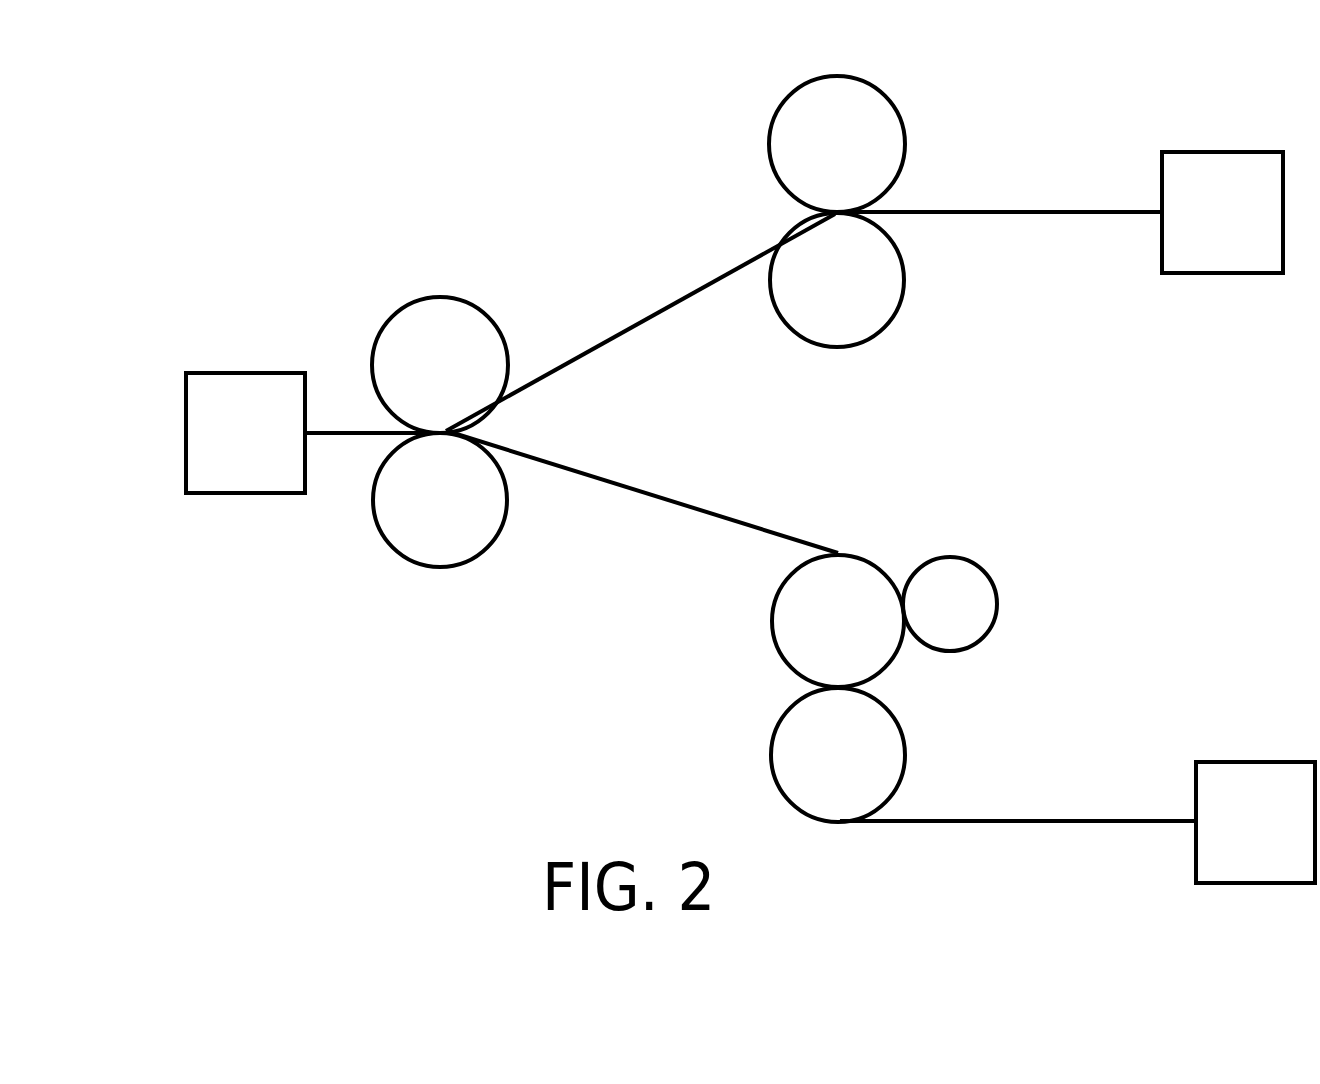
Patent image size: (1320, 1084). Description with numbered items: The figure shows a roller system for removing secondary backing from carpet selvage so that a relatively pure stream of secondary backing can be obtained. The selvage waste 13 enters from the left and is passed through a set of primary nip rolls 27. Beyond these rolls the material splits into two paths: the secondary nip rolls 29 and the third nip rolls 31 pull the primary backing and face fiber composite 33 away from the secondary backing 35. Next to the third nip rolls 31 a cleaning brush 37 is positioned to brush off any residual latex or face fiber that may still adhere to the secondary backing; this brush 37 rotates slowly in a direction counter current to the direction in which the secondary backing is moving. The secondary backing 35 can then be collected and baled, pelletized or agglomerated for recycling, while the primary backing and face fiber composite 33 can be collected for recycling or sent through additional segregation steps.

The selvage waste 13 is at (222, 456).
The primary nip rolls 27 is at (412, 390).
The secondary nip rolls 29 is at (810, 168).
The third nip rolls 31 is at (810, 643).
The primary backing and face fiber composite 33 is at (1196, 237).
The secondary backing 35 is at (1228, 847).
The cleaning brush 37 is at (924, 627).